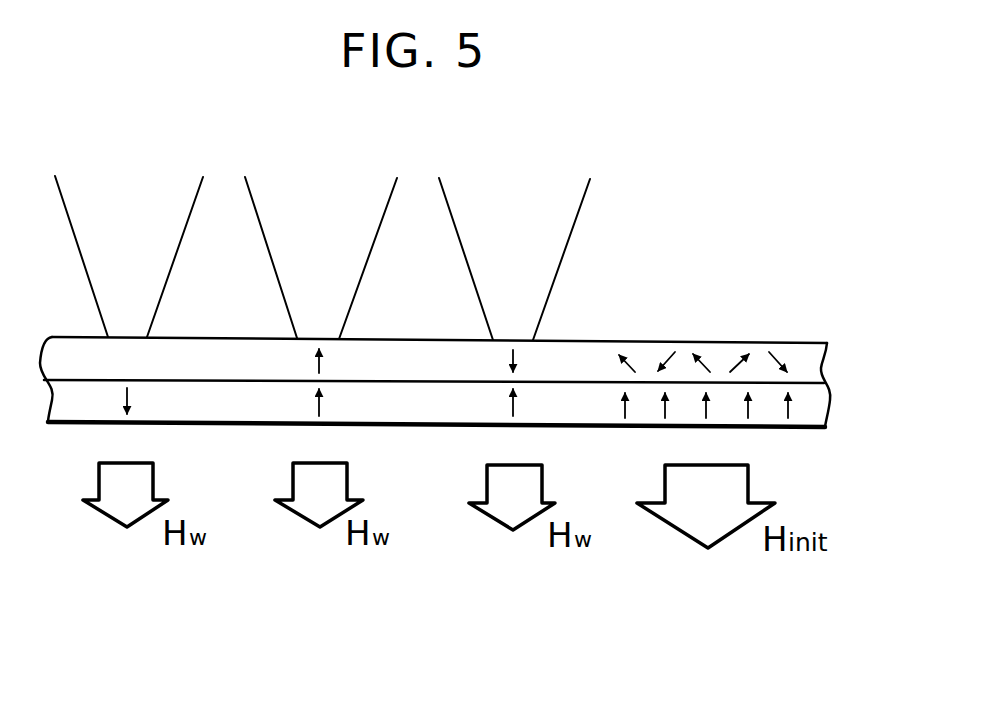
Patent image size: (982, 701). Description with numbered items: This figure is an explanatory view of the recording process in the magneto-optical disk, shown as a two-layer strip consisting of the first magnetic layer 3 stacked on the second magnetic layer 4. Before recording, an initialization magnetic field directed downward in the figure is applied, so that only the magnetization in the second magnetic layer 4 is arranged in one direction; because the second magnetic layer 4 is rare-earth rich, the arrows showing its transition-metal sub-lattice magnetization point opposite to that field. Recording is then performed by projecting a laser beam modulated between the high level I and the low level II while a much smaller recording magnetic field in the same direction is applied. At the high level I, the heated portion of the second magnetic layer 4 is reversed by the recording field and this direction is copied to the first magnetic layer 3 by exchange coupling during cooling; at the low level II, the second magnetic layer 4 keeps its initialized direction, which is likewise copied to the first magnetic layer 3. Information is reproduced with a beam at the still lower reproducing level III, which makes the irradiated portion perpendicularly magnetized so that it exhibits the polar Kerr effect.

The first magnetic layer 3 is at (820, 363).
The second magnetic layer 4 is at (822, 410).
The high level I is at (121, 152).
The low level II is at (307, 152).
The reproducing level III is at (502, 154).